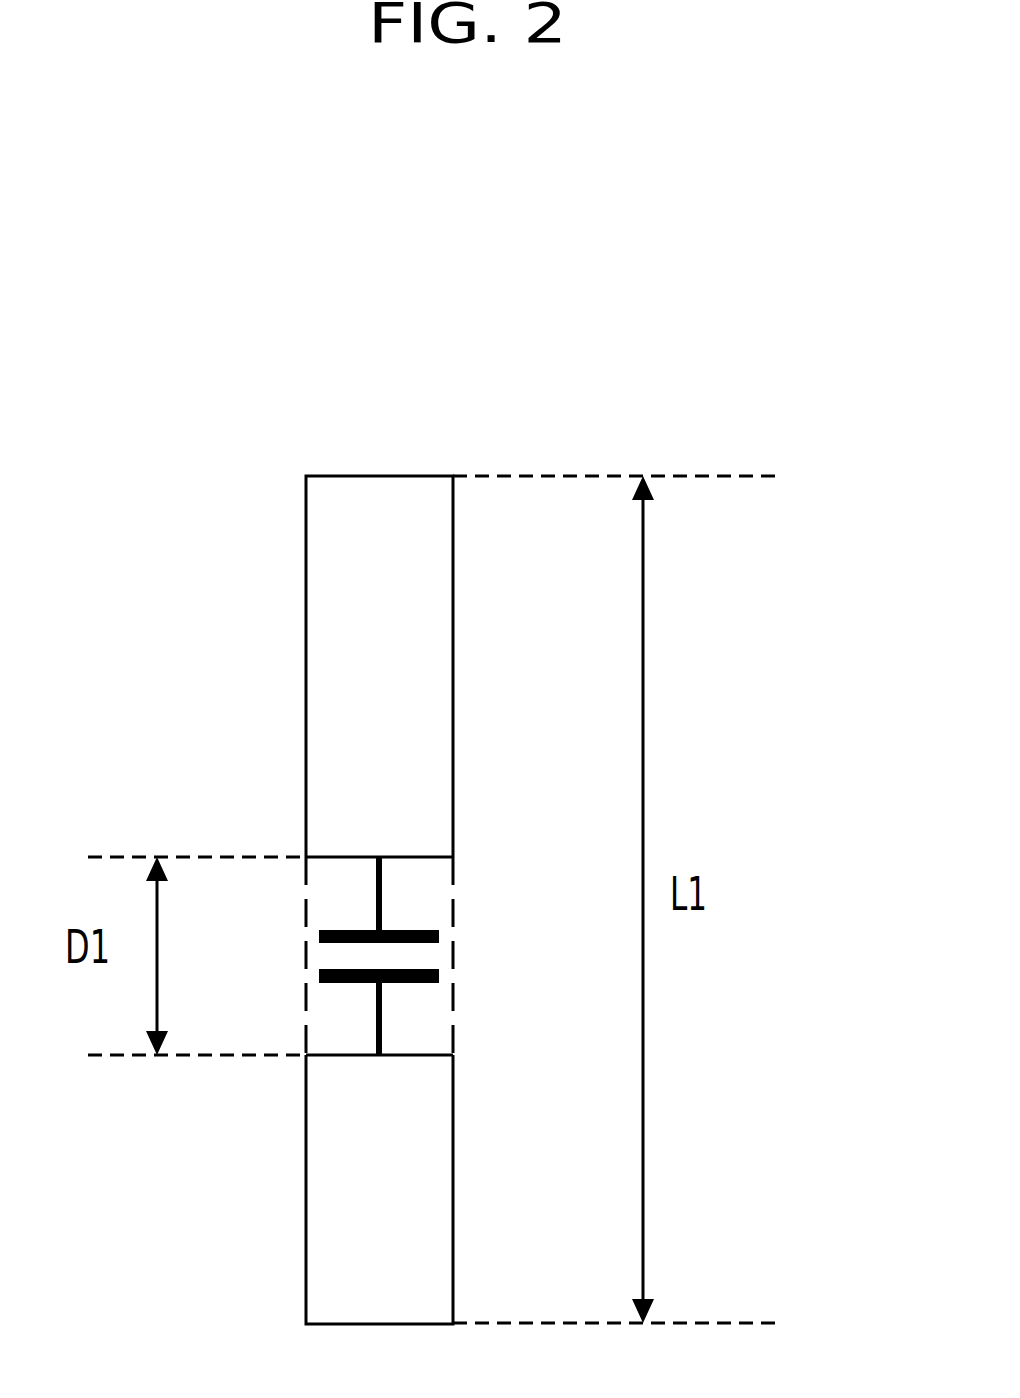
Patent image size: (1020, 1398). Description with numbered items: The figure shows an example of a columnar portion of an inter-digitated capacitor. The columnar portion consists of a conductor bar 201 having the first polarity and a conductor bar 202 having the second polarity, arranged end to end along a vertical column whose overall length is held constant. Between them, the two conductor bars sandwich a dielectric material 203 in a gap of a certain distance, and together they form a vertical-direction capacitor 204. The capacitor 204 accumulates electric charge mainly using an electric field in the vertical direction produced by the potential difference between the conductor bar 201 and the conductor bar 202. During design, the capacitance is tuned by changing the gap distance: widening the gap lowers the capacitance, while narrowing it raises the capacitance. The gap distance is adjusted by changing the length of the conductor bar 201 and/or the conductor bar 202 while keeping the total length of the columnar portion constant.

The conductor bar 201 is at (306, 630).
The conductor bar 202 is at (306, 1230).
The dielectric material 203 is at (306, 1022).
The vertical-direction capacitor 204 is at (415, 930).